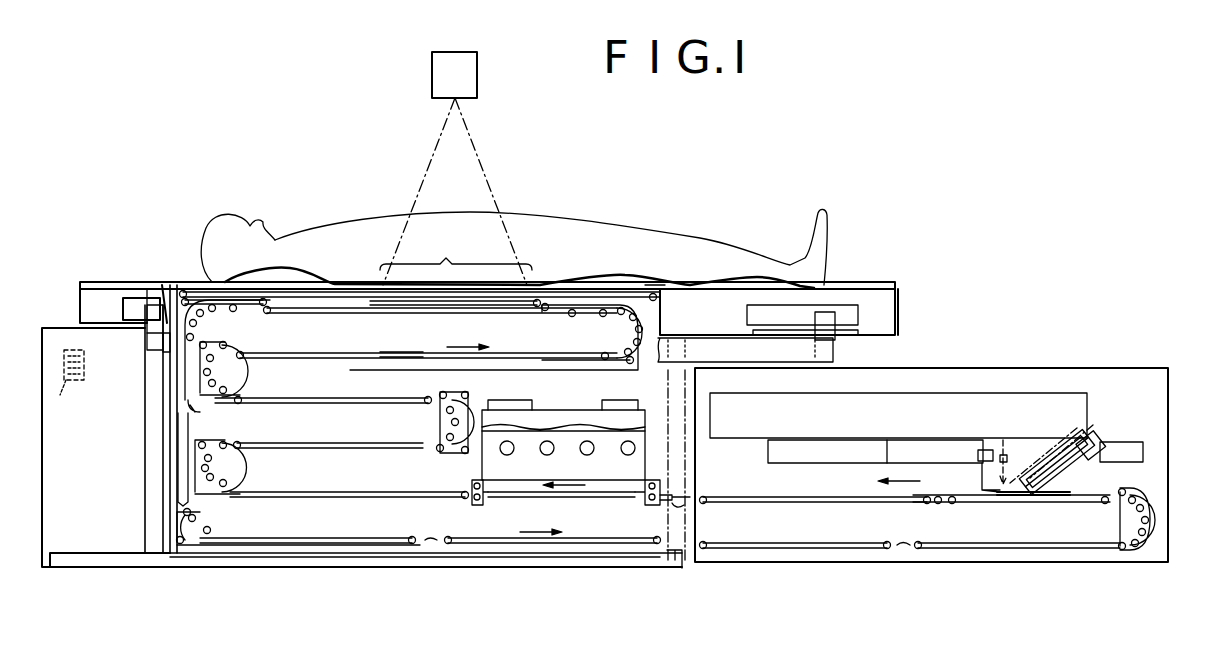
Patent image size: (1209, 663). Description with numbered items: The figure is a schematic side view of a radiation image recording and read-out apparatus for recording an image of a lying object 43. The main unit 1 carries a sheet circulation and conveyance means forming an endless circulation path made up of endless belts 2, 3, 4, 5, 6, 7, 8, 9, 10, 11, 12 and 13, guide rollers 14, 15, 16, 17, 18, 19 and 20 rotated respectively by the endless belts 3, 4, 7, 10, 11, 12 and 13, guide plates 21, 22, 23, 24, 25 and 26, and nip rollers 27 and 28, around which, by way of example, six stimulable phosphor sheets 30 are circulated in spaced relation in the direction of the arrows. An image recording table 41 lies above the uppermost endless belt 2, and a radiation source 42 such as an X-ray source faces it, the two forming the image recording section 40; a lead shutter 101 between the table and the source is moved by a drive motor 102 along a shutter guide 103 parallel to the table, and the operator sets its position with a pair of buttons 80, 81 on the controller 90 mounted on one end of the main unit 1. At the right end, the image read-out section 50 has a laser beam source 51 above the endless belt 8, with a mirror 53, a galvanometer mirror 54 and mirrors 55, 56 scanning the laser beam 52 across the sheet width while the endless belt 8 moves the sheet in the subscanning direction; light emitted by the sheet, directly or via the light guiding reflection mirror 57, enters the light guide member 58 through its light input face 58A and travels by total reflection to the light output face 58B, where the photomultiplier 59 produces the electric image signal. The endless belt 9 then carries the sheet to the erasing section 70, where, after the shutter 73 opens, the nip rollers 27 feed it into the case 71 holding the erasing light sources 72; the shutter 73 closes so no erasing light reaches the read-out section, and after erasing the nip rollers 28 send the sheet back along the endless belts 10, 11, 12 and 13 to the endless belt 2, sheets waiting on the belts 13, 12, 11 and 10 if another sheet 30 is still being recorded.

The main unit 1 is at (129, 536).
The endless belt 2 is at (318, 310).
The endless belt 3 is at (177, 380).
The endless belt 4 is at (327, 545).
The endless belt 5 is at (567, 548).
The endless belt 6 is at (830, 550).
The endless belt 7 is at (1030, 562).
The endless belt 8 is at (968, 505).
The endless belt 9 is at (835, 505).
The endless belt 10 is at (358, 498).
The endless belt 11 is at (320, 450).
The endless belt 12 is at (298, 405).
The endless belt 13 is at (315, 358).
The guide roller 14 is at (205, 318).
The guide roller 15 is at (195, 527).
The guide roller 16 is at (1140, 520).
The guide roller 17 is at (215, 470).
The guide roller 18 is at (446, 424).
The guide roller 19 is at (213, 378).
The guide roller 20 is at (615, 340).
The guide plate 21 is at (192, 398).
The guide plate 22 is at (183, 418).
The guide plate 23 is at (430, 540).
The guide plate 24 is at (686, 565).
The guide plate 25 is at (903, 545).
The guide plate 26 is at (680, 505).
The nip rollers 27 is at (640, 500).
The nip rollers 28 is at (486, 505).
The stimulable phosphor sheet 30 is at (398, 488).
The image recording section 40 is at (465, 256).
The image recording table 41 is at (650, 286).
The radiation source 42 is at (477, 92).
The object 43 is at (360, 226).
The image read-out section 50 is at (1162, 410).
The laser beam source 51 is at (974, 392).
The laser beam 52 is at (1083, 425).
The mirror 53 is at (1093, 425).
The galvanometer mirror 54 is at (995, 450).
The mirror 55 is at (992, 485).
The mirror 56 is at (1005, 455).
The light guiding reflection mirror 57 is at (1000, 497).
The light guide member 58 is at (1068, 475).
The light input face 58A is at (1040, 480).
The light output face 58B is at (1100, 460).
The photomultiplier 59 is at (1110, 445).
The erasing section 70 is at (581, 396).
The case 71 is at (630, 408).
The erasing light sources 72 is at (515, 450).
The shutter 73 is at (672, 495).
The button 80 is at (100, 352).
The button 81 is at (69, 402).
The controller 90 is at (88, 535).
The shutter 101 is at (198, 292).
The drive motor 102 is at (668, 300).
The shutter guide 103 is at (365, 290).